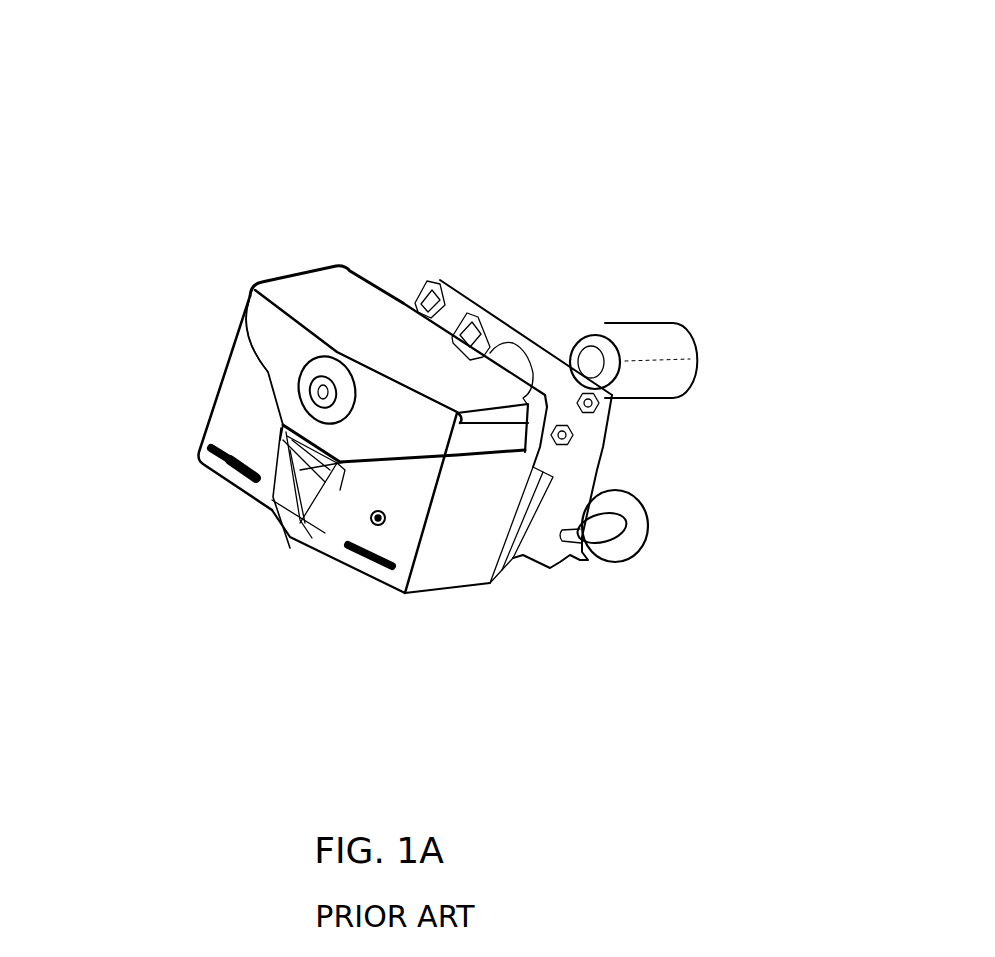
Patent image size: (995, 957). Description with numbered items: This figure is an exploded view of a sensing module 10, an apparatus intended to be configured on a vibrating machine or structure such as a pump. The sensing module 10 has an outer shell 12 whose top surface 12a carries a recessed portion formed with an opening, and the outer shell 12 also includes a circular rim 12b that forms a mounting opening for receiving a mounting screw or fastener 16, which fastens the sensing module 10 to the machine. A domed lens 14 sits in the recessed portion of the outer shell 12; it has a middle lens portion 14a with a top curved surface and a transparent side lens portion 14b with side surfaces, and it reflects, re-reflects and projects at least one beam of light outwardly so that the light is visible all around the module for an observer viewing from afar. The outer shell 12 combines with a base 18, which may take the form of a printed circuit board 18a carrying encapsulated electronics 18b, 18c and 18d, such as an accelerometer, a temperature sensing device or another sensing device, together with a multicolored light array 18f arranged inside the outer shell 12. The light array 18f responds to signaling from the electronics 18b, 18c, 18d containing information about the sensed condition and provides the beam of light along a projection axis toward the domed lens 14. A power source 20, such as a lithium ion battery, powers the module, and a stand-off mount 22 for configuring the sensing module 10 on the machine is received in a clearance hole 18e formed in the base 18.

The sensing module 10 is at (485, 150).
The outer shell 12 is at (300, 272).
The top surface 12a is at (245, 408).
The circular rim 12b is at (298, 381).
The domed lens 14 is at (273, 493).
The middle lens portion 14a is at (305, 500).
The side lens portion 14b is at (337, 493).
The mounting screw or fastener 16 is at (300, 378).
The base 18 is at (607, 457).
The printed circuit board 18a is at (550, 358).
The encapsulated electronics element 18b is at (432, 292).
The encapsulated electronics element 18c is at (600, 435).
The encapsulated electronics element 18d is at (523, 527).
The clearance hole 18e is at (490, 353).
The multicolored light array 18f is at (314, 481).
The power source 20 is at (597, 562).
The stand-off mount 22 is at (660, 323).